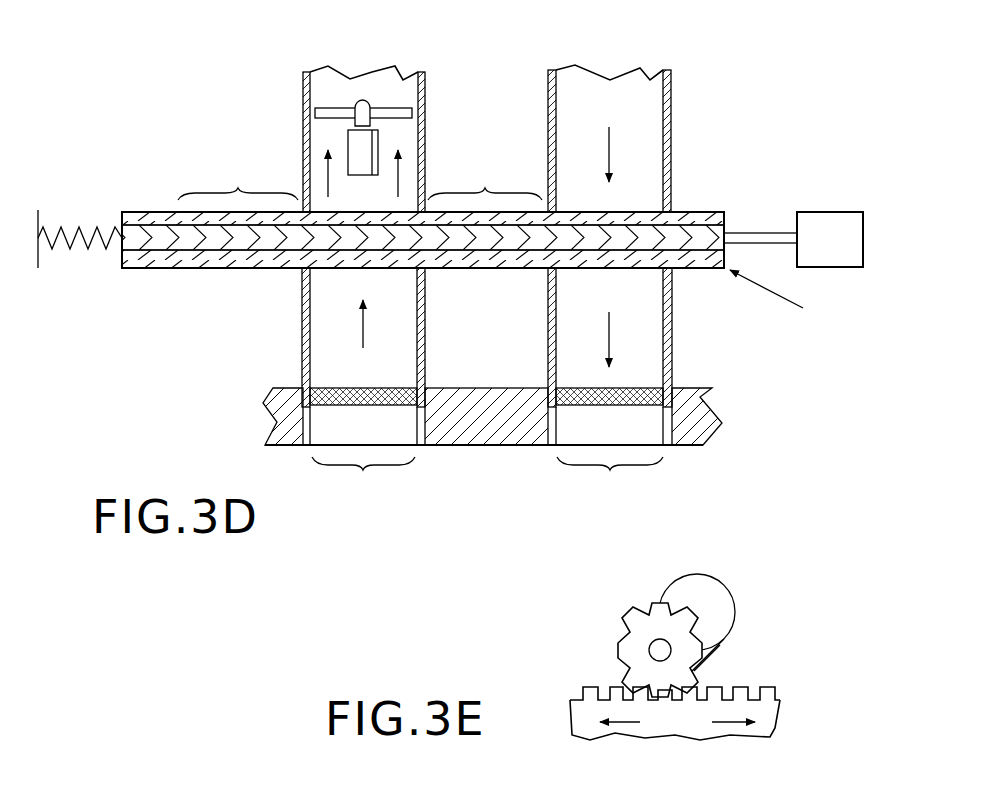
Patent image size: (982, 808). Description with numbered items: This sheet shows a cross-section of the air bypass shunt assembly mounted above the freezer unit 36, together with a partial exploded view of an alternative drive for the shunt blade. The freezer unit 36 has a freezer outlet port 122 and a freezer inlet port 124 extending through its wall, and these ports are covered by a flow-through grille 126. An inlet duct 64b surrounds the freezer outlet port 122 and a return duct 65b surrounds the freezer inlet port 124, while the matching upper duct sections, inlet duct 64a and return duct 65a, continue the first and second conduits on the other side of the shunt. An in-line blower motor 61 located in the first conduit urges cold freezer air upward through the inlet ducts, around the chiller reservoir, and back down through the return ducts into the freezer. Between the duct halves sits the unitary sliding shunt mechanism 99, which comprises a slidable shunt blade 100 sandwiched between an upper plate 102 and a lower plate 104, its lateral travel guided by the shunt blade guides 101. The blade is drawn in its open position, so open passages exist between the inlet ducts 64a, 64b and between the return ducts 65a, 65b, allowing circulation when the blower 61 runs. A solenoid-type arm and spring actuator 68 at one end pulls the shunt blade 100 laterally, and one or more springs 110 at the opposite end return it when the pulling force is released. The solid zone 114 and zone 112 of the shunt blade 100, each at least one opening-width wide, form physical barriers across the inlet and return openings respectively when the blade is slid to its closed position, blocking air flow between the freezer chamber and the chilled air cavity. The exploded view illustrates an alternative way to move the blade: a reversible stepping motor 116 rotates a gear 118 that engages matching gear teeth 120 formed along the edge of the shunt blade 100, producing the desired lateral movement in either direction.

In FIG. 3D, the freezer unit 36 is at (265, 421).
In FIG. 3D, the in-line blower motor 61 is at (360, 138).
In FIG. 3D, the inlet duct 64a is at (405, 130).
In FIG. 3D, the inlet duct 64b is at (335, 322).
In FIG. 3D, the return duct 65a is at (643, 170).
In FIG. 3D, the return duct 65b is at (638, 329).
In FIG. 3D, the actuator 68 is at (825, 225).
In FIG. 3D, the sliding shunt mechanism 99 is at (781, 301).
In FIG. 3D, the shunt blade 100 is at (163, 238).
In FIG. 3E, the shunt blade 100 is at (675, 720).
In FIG. 3D, the shunt blade guides 101 is at (300, 0).
In FIG. 3D, the upper plate 102 is at (133, 217).
In FIG. 3D, the lower plate 104 is at (160, 270).
In FIG. 3D, the springs 110 is at (225, 0).
In FIG. 3D, the zone 112 is at (485, 181).
In FIG. 3D, the zone 114 is at (238, 181).
In FIG. 3E, the reversible stepping motor 116 is at (703, 592).
In FIG. 3E, the gear 118 is at (649, 648).
In FIG. 3E, the gear teeth 120 is at (763, 685).
In FIG. 3D, the freezer outlet port 122 is at (363, 480).
In FIG. 3D, the freezer inlet port 124 is at (610, 480).
In FIG. 3D, the flow-through grille 126 is at (585, 388).